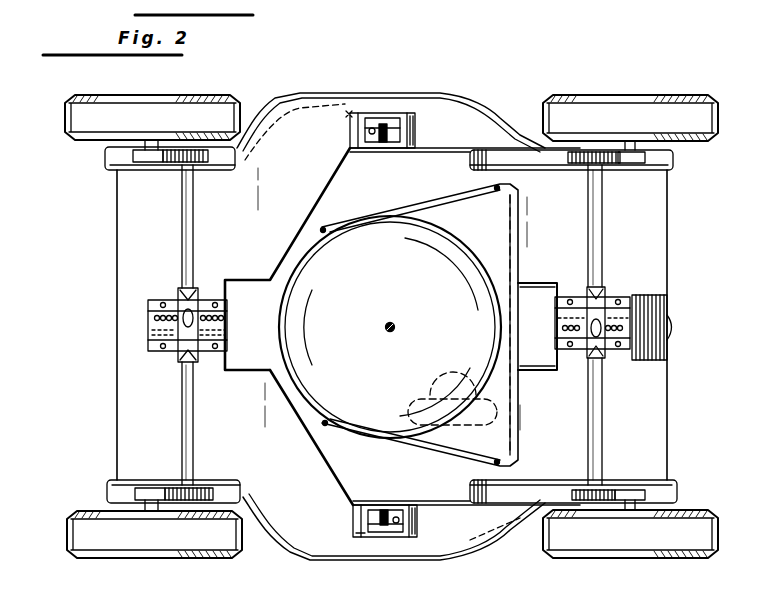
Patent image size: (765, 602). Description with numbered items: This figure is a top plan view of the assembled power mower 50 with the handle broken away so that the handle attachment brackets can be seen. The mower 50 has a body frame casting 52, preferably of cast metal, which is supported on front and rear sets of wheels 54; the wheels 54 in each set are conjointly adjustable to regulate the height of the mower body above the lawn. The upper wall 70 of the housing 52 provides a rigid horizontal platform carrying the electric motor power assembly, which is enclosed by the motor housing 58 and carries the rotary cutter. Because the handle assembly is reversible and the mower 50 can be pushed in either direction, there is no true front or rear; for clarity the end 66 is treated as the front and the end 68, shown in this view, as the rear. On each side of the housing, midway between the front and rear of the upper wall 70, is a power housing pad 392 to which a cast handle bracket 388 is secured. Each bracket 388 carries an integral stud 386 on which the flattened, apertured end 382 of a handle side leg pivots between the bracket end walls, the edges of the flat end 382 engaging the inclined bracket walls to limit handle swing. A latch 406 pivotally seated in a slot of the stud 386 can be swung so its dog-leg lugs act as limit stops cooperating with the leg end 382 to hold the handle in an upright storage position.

The power mower 50 is at (115, 210).
The body frame casting 52 is at (283, 130).
The wheels 54 is at (160, 113).
The motor housing 58 is at (420, 438).
The front end 66 is at (133, 313).
The rear end 68 is at (657, 273).
The upper wall 70 is at (305, 530).
The ends of legs 382 is at (368, 128).
The stud 386 is at (386, 142).
The handle bracket 388 is at (390, 122).
The power housing pad 392 is at (348, 114).
The latch 406 is at (375, 144).